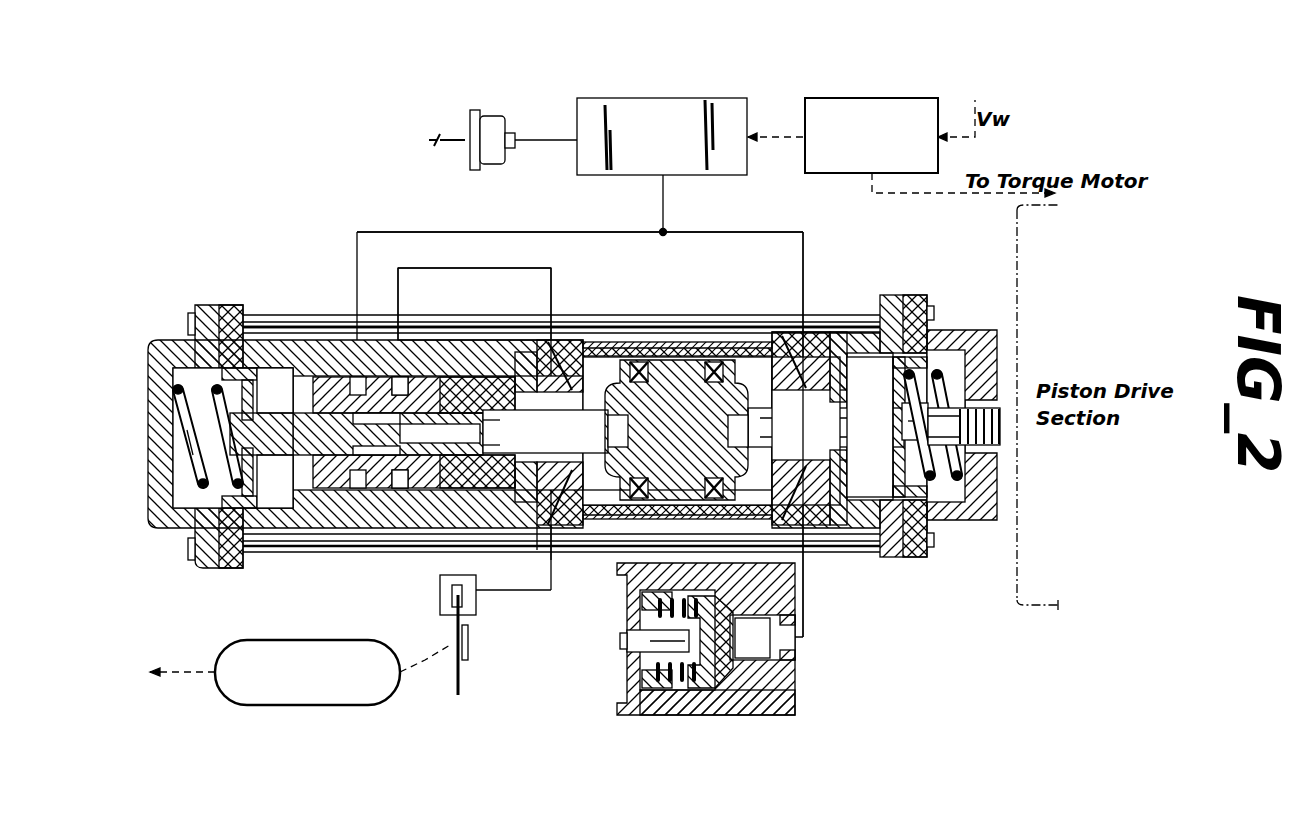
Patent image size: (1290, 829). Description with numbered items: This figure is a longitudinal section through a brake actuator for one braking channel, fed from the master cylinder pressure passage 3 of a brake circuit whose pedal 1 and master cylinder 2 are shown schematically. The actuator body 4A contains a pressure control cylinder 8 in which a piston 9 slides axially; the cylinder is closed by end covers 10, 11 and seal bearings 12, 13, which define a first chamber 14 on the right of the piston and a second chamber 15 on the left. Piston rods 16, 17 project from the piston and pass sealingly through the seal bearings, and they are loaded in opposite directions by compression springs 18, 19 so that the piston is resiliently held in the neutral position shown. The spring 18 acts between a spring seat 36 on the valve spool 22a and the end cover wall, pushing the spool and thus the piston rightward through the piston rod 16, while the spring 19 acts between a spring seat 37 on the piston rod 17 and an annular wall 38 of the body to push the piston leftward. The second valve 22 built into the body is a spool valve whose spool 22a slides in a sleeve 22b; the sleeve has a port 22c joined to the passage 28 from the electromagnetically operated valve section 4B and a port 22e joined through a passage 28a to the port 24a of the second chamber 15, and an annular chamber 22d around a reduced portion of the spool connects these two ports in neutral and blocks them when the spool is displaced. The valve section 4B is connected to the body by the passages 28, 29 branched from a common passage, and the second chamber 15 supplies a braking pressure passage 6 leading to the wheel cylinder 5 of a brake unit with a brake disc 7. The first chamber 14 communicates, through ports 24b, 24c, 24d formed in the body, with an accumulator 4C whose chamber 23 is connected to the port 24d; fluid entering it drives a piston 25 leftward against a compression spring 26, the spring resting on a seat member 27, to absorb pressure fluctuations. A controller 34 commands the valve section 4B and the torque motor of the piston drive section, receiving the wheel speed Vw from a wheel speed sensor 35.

The brake pedal 1 is at (440, 148).
The master cylinder 2 is at (488, 165).
The master cylinder pressure passage 3 is at (545, 140).
The actuator body 4A is at (268, 300).
The valve section 4B is at (722, 100).
The accumulator 4C is at (617, 686).
The wheel cylinder 5 is at (465, 622).
The braking pressure passage 6 is at (540, 555).
The brake disc 7 is at (460, 678).
The pressure control cylinder 8 is at (623, 510).
The piston 9 is at (690, 360).
The end cover 10 is at (693, 430).
The end cover 11 is at (760, 318).
The seal bearing 12 is at (535, 526).
The seal bearing 13 is at (887, 427).
The first chamber 14 is at (745, 358).
The second chamber 15 is at (605, 365).
The piston rod 16 is at (440, 492).
The piston rod 17 is at (865, 555).
The compression spring 18 is at (178, 512).
The compression spring 19 is at (937, 520).
The second valve 22 is at (330, 492).
The valve spool 22a is at (263, 510).
The sleeve 22b is at (440, 386).
The port 22c is at (336, 377).
The annular chamber 22d is at (380, 492).
The port 22e is at (383, 378).
The chamber 23 is at (752, 647).
The port 24a is at (553, 340).
The port 24b is at (800, 345).
The port 24c is at (555, 535).
The port 24d is at (812, 540).
The piston 25 is at (732, 663).
The compression spring 26 is at (618, 615).
The valve housing 27 is at (727, 715).
The passage 28 is at (357, 238).
The passage 28a is at (500, 268).
The passage 29 is at (805, 242).
The controller 34 is at (872, 98).
The wheel speed sensor 35 is at (307, 706).
The spring seat 36 is at (265, 345).
The spring seat 37 is at (902, 545).
The annular wall 38 is at (962, 350).